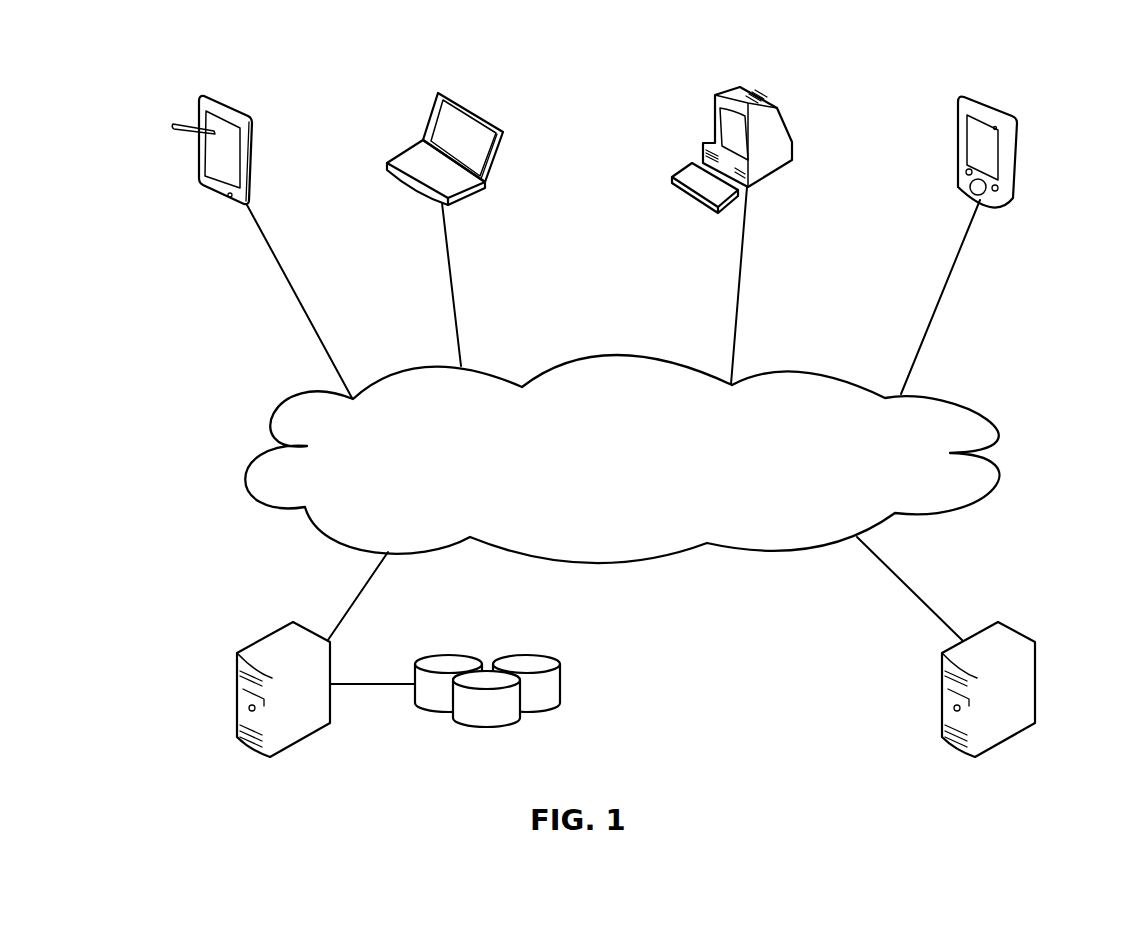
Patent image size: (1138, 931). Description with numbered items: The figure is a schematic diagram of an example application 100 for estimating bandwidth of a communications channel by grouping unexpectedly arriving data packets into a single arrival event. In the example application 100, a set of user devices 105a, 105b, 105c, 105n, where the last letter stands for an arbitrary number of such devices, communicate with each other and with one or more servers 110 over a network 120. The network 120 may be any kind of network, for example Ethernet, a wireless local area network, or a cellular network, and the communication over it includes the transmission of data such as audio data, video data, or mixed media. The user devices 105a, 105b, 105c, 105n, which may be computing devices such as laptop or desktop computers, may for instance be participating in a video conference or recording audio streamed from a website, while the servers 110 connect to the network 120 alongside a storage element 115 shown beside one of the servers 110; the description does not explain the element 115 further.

The example application 100 is at (97, 106).
The user device 105a is at (210, 193).
The user device 105b is at (413, 194).
The user device 105c is at (695, 200).
The user device 105n is at (965, 195).
The server 110 is at (262, 641).
The database 115 is at (560, 682).
The network 120 is at (306, 446).